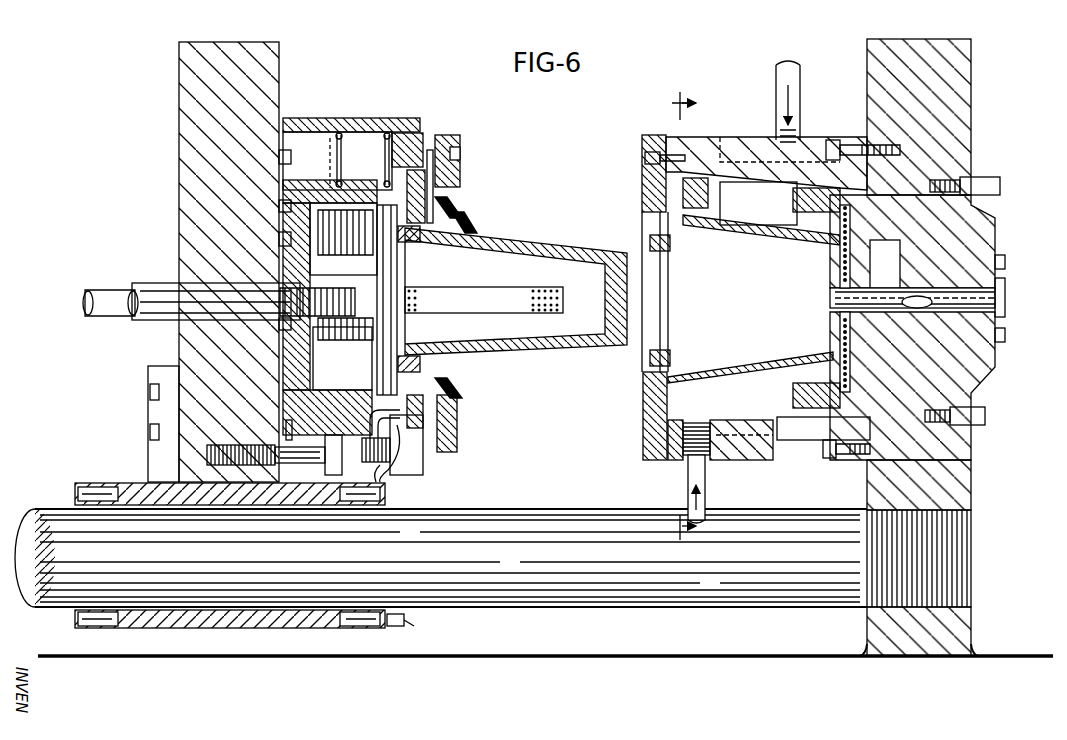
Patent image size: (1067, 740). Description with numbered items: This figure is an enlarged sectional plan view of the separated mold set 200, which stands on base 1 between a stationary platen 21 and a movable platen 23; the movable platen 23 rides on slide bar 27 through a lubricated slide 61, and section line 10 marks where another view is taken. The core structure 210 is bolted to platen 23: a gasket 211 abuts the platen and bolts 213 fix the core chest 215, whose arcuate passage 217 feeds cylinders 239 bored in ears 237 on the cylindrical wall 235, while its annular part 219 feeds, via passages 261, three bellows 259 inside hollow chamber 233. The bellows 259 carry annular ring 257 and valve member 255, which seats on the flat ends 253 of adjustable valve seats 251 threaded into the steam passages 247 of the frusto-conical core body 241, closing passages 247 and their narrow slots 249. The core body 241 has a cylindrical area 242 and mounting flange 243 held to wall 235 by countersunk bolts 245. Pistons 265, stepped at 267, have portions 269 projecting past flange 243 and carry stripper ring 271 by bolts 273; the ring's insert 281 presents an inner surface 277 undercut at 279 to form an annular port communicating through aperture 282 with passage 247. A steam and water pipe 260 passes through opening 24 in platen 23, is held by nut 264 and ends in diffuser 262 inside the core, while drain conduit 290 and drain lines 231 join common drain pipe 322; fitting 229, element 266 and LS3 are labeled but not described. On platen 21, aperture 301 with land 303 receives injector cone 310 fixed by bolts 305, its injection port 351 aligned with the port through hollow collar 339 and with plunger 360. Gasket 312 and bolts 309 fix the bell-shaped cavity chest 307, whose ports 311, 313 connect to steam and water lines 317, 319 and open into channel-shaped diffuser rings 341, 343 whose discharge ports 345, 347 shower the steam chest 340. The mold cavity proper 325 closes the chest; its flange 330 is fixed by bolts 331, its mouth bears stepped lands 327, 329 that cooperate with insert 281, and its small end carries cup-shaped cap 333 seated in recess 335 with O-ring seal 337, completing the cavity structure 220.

The base 1 is at (993, 648).
The section line 10 is at (696, 316).
The stationary platen 21 is at (972, 158).
The movable platen 23 is at (279, 74).
The opening 24 is at (184, 269).
The slide bar 27 is at (592, 585).
The slide 61 is at (252, 644).
The mold set 200 is at (612, 128).
The core structure 210 is at (489, 428).
The gasket 211 is at (284, 122).
The bolts 213 is at (380, 527).
The core chest 215 is at (272, 378).
The arcuate passage 217 is at (278, 154).
The annular part 219 is at (278, 218).
The cavity structure 220 is at (640, 428).
The valve body 229 is at (435, 457).
The drain lines 231 is at (392, 482).
The hollow chamber 233 is at (330, 285).
The outer wall 235 is at (327, 412).
The ears 237 is at (382, 126).
The cylinders 239 is at (363, 160).
The core body 241 is at (554, 247).
The cylindrical area 242 is at (471, 194).
The mounting flange 243 is at (434, 182).
The machine bolts 245 is at (368, 175).
The steam passages 247 is at (482, 366).
The slots 249 is at (592, 256).
The valve seats 251 is at (450, 338).
The flat ends 253 is at (422, 266).
The valve member 255 is at (484, 300).
The annular ring 257 is at (378, 374).
The bellows 259 is at (345, 275).
The steam and water pipe 260 is at (226, 326).
The passages 261 is at (282, 204).
The diffuser 262 is at (504, 296).
The nut 264 is at (369, 300).
The pistons 265 is at (408, 150).
The chamber 266 is at (354, 126).
The step 267 is at (436, 136).
The stepped portion 269 is at (456, 144).
The stripper ring 271 is at (450, 430).
The machine bolts 273 is at (464, 144).
The inner peripheral surface 277 is at (473, 222).
The undercut 279 is at (462, 258).
The insert 281 is at (570, 182).
The aperture 282 is at (476, 376).
The conduit 290 is at (116, 315).
The aperture 301 is at (965, 205).
The land 303 is at (978, 446).
The bolts 305 is at (988, 423).
The cavity chest 307 is at (803, 448).
The machine bolts 309 is at (830, 140).
The injector cone 310 is at (992, 388).
The port 311 is at (708, 465).
The gasket 312 is at (866, 138).
The port 313 is at (776, 124).
The steam and water line 317 is at (800, 86).
The steam and water line 319 is at (735, 516).
The common drain pipe 322 is at (660, 456).
The mold cavity proper 325 is at (734, 240).
The annular land 327 is at (654, 372).
The annular land 329 is at (664, 294).
The circumferential flange 330 is at (651, 465).
The machine bolts 331 is at (644, 160).
The cup-shaped cap 333 is at (893, 378).
The recess 335 is at (904, 242).
The O-ring seal 337 is at (874, 214).
The hollow collar 339 is at (832, 322).
The steam chest 340 is at (830, 302).
The diffuser ring 341 is at (716, 214).
The diffuser ring 343 is at (816, 395).
The discharge ports 345 is at (688, 228).
The discharge ports 347 is at (816, 210).
The injection port 351 is at (916, 296).
The plunger 360 is at (1006, 290).
The limit switch LS3 is at (398, 628).